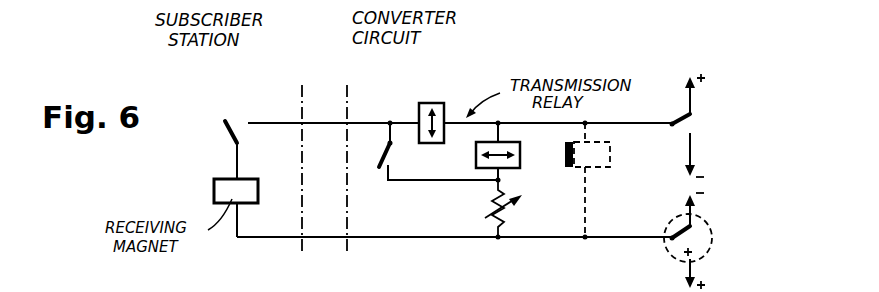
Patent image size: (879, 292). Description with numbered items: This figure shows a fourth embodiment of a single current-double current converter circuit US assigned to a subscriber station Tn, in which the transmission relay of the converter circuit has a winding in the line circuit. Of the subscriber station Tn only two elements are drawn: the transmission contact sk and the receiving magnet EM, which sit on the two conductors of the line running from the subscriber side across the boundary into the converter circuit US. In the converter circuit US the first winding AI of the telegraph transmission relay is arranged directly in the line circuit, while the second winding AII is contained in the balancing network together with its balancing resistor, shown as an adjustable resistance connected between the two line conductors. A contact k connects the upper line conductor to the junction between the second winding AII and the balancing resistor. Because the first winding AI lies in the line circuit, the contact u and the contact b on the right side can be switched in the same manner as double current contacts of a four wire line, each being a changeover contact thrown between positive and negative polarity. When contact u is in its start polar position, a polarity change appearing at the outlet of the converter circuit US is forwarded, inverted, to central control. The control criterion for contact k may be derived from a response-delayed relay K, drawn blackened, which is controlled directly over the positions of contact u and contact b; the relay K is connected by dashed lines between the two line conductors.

The subscriber station Tn is at (255, 71).
The converter circuit US is at (379, 71).
The transmission contact sk is at (217, 149).
The receiving magnet EM is at (220, 208).
The contact k is at (433, 151).
The first winding of the transmission relay AI is at (431, 112).
The second winding of the transmission relay AII is at (512, 180).
The relay K is at (595, 180).
The contact u is at (690, 125).
The receiving contact b is at (688, 241).